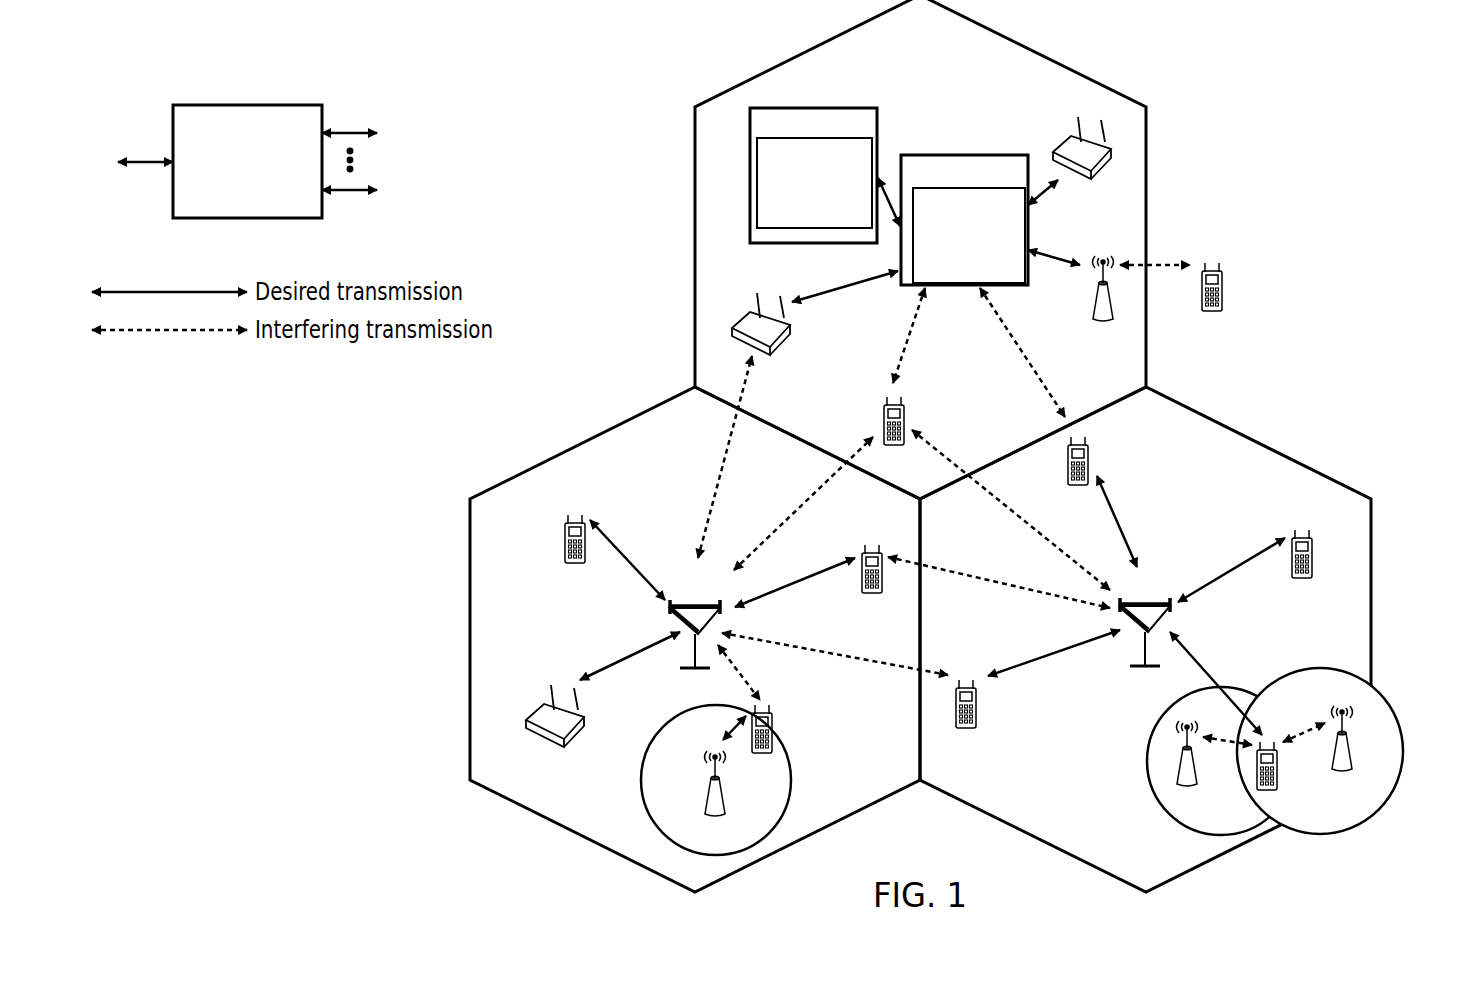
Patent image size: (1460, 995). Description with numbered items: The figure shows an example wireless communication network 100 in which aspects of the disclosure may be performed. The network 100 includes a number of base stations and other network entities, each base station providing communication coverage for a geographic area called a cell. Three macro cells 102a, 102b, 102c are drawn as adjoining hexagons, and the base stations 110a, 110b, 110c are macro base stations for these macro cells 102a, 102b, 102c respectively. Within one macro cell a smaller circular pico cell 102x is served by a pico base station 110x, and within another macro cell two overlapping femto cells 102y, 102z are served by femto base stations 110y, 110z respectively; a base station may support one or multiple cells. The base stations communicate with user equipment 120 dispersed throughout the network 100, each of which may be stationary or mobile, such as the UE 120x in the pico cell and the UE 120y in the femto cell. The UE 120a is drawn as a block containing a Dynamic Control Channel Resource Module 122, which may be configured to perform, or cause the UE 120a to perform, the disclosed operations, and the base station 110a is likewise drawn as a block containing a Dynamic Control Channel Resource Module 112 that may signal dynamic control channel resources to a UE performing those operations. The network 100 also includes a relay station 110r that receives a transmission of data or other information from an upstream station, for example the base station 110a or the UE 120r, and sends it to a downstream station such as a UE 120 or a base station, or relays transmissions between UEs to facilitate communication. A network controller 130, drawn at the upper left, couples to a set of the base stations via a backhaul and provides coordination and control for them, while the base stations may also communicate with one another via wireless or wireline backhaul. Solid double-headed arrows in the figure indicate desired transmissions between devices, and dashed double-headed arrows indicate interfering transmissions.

The wireless communication network 100 is at (1297, 67).
The macro cell 102a is at (1048, 36).
The macro cell 102b is at (583, 442).
The macro cell 102c is at (1277, 428).
The pico cell 102x is at (665, 722).
The femto cell 102y is at (1153, 725).
The femto cell 102z is at (1330, 652).
The base station 110a is at (952, 154).
The base station 110b is at (703, 592).
The base station 110c is at (1155, 590).
The relay station 110r is at (1092, 300).
The pico base station 110x is at (722, 806).
The femto base station 110y is at (1194, 775).
The femto base station 110z is at (1349, 764).
The Dynamic Control Channel Resource Module 112 is at (922, 283).
The user equipment 120 is at (1084, 140).
The user equipment 120a is at (866, 108).
The user equipment 120r is at (1223, 302).
The user equipment 120x is at (787, 712).
The user equipment 120y is at (1256, 778).
The Dynamic Control Channel Resource Module 122 is at (752, 205).
The network controller 130 is at (243, 104).